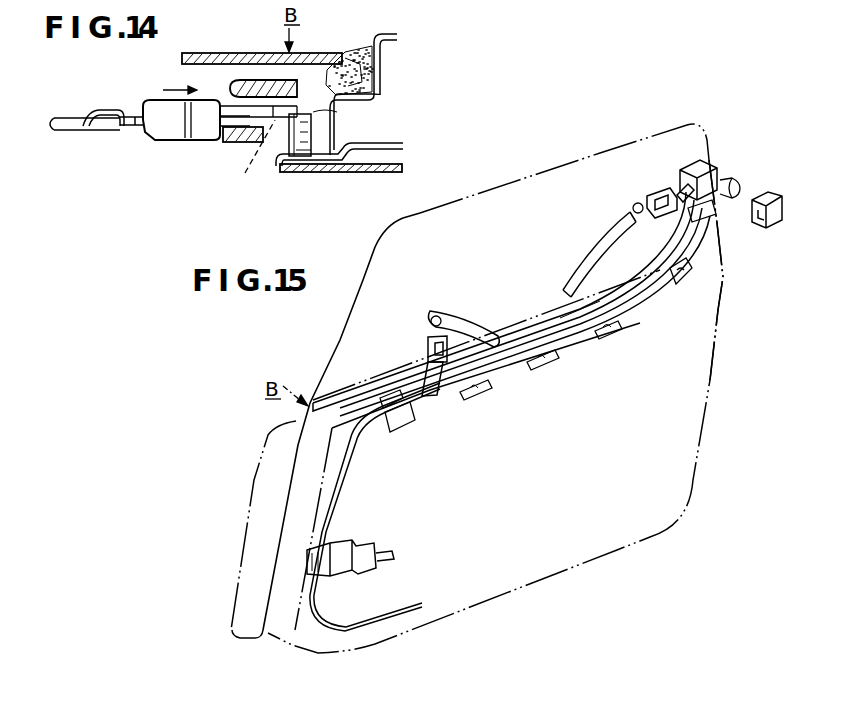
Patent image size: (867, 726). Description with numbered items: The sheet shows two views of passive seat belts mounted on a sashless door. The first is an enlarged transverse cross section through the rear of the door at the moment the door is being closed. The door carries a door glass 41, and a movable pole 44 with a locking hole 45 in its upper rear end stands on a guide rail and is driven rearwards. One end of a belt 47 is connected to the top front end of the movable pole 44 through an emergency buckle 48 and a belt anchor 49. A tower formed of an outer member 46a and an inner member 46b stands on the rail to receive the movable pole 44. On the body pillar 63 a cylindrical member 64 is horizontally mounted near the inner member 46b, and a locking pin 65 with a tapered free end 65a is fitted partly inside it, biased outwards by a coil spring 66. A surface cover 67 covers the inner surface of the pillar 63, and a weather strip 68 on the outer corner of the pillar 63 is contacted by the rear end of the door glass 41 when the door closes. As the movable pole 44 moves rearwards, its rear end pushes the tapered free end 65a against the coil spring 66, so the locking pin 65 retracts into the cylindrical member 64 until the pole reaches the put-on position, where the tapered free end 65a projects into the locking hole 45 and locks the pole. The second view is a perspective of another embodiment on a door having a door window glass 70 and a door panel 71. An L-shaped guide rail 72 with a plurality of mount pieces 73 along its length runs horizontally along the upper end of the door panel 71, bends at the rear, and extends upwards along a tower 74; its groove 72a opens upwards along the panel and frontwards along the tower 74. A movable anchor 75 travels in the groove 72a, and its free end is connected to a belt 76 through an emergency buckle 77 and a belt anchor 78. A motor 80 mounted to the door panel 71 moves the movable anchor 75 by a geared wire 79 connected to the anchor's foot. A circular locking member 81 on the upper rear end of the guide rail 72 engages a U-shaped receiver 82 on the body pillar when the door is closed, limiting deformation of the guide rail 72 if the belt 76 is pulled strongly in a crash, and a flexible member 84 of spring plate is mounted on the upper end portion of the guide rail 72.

In FIG. 14, the door glass 41 is at (253, 53).
In FIG. 14, the movable pole 44 is at (232, 110).
In FIG. 14, the locking hole 45 is at (257, 155).
In FIG. 14, the outer member 46a is at (293, 83).
In FIG. 14, the inner member 46b is at (229, 141).
In FIG. 14, the belt 47 is at (66, 133).
In FIG. 14, the emergency buckle 48 is at (164, 134).
In FIG. 14, the belt anchor 49 is at (126, 127).
In FIG. 14, the pillar 63 is at (397, 36).
In FIG. 14, the cylindrical member 64 is at (292, 158).
In FIG. 14, the locking pin 65 is at (312, 130).
In FIG. 14, the tapered free end 65a is at (338, 112).
In FIG. 14, the coil spring 66 is at (316, 161).
In FIG. 14, the surface cover 67 is at (368, 173).
In FIG. 14, the weather strip 68 is at (376, 64).
In FIG. 15, the door window glass 70 is at (332, 363).
In FIG. 15, the door panel 71 is at (710, 352).
In FIG. 15, the guide rail 72 is at (510, 360).
In FIG. 15, the groove 72a is at (542, 332).
In FIG. 15, the mount pieces 73 is at (474, 398).
In FIG. 15, the tower 74 is at (712, 166).
In FIG. 15, the movable anchor 75 is at (421, 378).
In FIG. 15, the belt 76 is at (478, 308).
In FIG. 15, the emergency buckle 77 is at (428, 340).
In FIG. 15, the belt anchor 78 is at (434, 314).
In FIG. 15, the geared wire 79 is at (338, 492).
In FIG. 15, the motor 80 is at (370, 553).
In FIG. 15, the locking member 81 is at (741, 186).
In FIG. 15, the U-shaped receiver 82 is at (766, 228).
In FIG. 15, the flexible member 84 is at (684, 276).